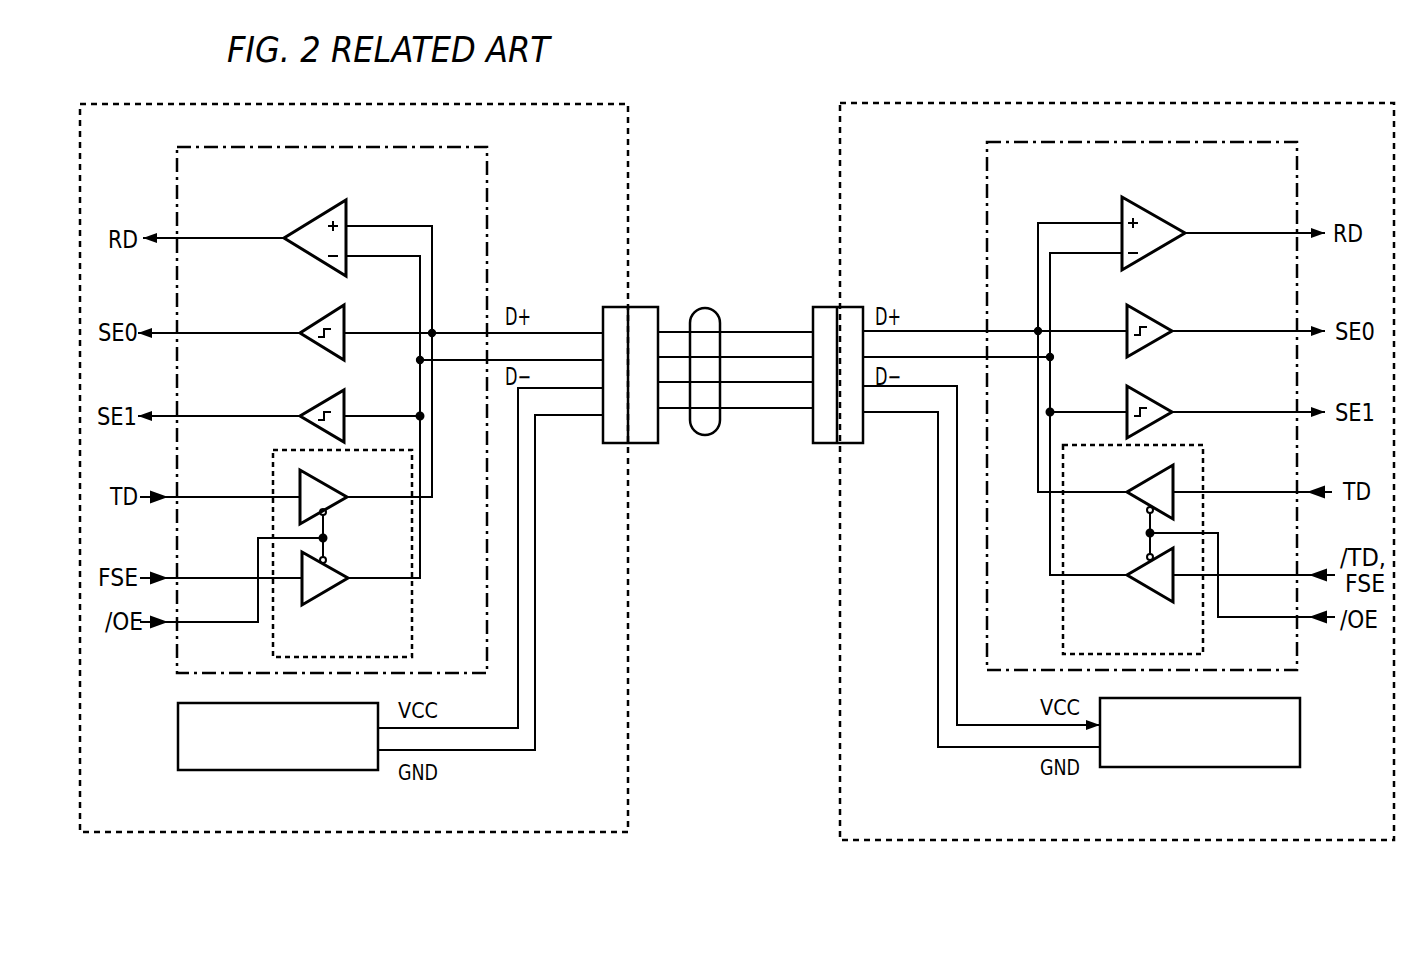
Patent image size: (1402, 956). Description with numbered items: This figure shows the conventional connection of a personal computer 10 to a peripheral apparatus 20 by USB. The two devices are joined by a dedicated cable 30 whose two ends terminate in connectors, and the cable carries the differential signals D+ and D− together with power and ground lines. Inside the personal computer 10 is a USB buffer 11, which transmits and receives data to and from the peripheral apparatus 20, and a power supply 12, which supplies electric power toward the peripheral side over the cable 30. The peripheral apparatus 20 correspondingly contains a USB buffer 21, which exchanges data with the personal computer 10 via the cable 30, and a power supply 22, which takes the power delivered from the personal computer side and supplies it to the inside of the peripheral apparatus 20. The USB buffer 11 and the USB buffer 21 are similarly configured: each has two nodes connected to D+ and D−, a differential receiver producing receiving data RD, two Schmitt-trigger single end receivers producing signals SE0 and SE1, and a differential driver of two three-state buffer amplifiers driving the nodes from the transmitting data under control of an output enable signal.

The personal computer 10 is at (632, 744).
The USB buffer 11 is at (488, 153).
The power supply 12 is at (178, 724).
The peripheral apparatus 20 is at (840, 746).
The USB buffer 21 is at (1297, 152).
The power supply 22 is at (1300, 727).
The cable 30 is at (706, 312).